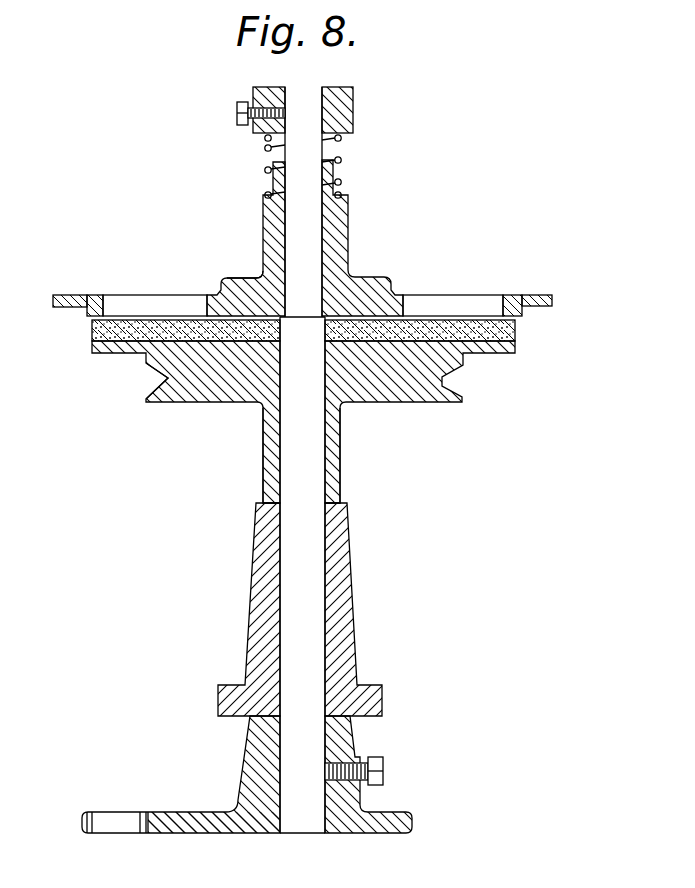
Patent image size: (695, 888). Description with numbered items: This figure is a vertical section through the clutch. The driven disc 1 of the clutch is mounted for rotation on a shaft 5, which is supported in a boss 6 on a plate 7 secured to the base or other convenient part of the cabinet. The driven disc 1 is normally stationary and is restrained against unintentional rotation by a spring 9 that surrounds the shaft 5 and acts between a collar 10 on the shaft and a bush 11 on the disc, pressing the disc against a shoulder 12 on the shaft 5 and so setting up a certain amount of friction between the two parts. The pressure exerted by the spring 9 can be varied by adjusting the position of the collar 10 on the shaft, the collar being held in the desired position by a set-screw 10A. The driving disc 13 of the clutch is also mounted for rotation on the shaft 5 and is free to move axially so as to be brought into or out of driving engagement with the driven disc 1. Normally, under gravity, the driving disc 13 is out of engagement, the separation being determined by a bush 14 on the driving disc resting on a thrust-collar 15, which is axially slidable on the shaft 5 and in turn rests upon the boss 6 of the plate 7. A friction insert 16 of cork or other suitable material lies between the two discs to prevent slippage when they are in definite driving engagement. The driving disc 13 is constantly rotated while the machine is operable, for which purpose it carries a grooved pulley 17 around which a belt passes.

The driven disc 1 is at (513, 303).
The shaft 5 is at (310, 454).
The boss 6 is at (252, 780).
The plate 7 is at (182, 817).
The spring 9 is at (341, 182).
The collar 10 is at (355, 115).
The set-screw 10A is at (237, 115).
The bush 11 is at (340, 225).
The shoulder 12 is at (258, 268).
The driving disc 13 is at (493, 352).
The bush 14 is at (268, 462).
The thrust-collar 15 is at (253, 594).
The friction insert 16 is at (92, 328).
The grooved pulley 17 is at (165, 381).